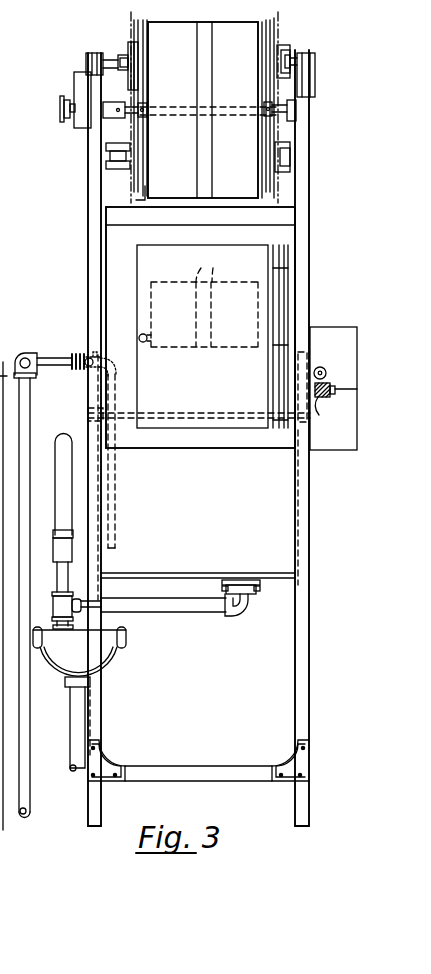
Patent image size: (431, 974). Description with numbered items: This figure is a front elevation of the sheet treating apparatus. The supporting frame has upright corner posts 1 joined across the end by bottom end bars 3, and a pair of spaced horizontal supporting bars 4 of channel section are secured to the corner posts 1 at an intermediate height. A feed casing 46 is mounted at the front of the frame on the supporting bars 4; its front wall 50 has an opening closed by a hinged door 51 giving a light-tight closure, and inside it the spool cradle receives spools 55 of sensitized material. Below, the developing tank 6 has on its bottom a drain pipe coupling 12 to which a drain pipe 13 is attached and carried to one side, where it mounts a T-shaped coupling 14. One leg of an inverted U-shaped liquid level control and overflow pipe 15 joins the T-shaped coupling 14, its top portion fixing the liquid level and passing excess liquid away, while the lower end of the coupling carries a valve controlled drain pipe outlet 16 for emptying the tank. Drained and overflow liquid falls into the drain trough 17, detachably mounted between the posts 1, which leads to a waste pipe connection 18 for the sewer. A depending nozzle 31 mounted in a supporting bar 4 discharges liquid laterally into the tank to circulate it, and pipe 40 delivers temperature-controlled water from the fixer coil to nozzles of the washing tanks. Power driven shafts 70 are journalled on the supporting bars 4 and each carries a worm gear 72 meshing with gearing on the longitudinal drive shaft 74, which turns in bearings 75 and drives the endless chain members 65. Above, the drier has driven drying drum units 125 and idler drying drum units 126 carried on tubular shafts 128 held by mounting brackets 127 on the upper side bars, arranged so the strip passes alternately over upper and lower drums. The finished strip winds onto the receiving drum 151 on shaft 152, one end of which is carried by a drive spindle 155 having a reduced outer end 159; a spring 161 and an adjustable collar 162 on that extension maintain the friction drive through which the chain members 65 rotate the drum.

The corner posts 1 is at (88, 197).
The bottom end bars 3 is at (196, 766).
The horizontal supporting bars 4 is at (303, 354).
The developing tank 6 is at (284, 576).
The drain pipe coupling 12 is at (244, 580).
The drain pipe 13 is at (190, 598).
The T-shaped coupling 14 is at (58, 604).
The inverted U-shaped liquid level control and overflow pipe 15 is at (63, 440).
The valve controlled drain pipe outlet 16 is at (58, 631).
The drain trough 17 is at (112, 655).
The waste pipe connection 18 is at (70, 726).
The nozzle 31 is at (111, 493).
The pipe 40 is at (46, 372).
The feed casing 46 is at (275, 217).
The front wall 50 is at (115, 237).
The door 51 is at (141, 265).
The spools 55 is at (198, 299).
The endless chain members 65 is at (130, 185).
The power driven shafts 70 is at (348, 390).
The worm gear 72 is at (328, 412).
The drive shaft 74 is at (321, 367).
The bearings 75 is at (327, 375).
The driven drying drum units 125 is at (141, 198).
The idler drying drum units 126 is at (146, 33).
The mounting brackets 127 is at (87, 62).
The tubular shafts 128 is at (294, 56).
The receiving drum 151 is at (148, 73).
The shaft 152 is at (296, 109).
The drive spindle 155 is at (112, 103).
The reduced outer end 159 is at (60, 110).
The spring 161 is at (68, 121).
The collar 162 is at (61, 99).